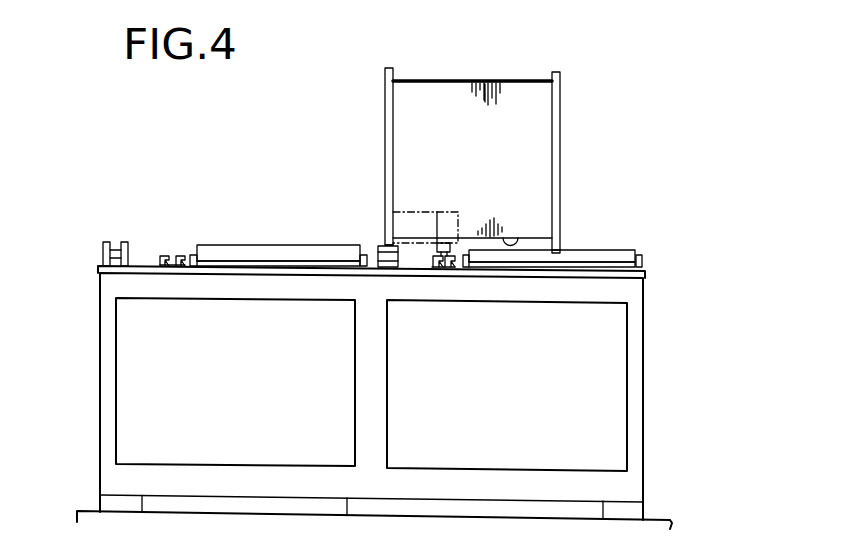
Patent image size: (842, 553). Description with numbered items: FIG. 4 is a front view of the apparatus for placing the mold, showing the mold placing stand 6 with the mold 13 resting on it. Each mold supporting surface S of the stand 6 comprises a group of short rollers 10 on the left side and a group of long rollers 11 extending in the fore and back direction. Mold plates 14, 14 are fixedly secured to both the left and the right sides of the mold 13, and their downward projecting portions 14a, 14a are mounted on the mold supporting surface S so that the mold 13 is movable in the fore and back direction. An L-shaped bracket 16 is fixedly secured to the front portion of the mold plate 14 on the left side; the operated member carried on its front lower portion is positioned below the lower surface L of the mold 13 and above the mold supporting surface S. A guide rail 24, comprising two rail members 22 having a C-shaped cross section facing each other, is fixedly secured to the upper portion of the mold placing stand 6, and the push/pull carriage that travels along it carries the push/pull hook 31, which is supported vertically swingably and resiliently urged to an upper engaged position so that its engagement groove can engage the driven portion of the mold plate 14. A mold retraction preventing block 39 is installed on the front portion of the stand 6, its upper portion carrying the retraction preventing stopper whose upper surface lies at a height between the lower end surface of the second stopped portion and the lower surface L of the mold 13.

The mold placing stand 6 is at (98, 363).
The short rollers 10 is at (115, 242).
The long rollers 11 is at (268, 245).
The mold 13 is at (520, 137).
The mold plate 14 is at (385, 77).
The downward projecting portion 14a is at (384, 241).
The L-shaped bracket 16 is at (420, 212).
The rail member 22 is at (435, 268).
The guide rail 24 is at (163, 267).
The push/pull hook 31 is at (443, 245).
The mold retraction preventing block 39 is at (437, 212).
The lower surface L is at (520, 240).
The mold supporting surface S is at (223, 244).